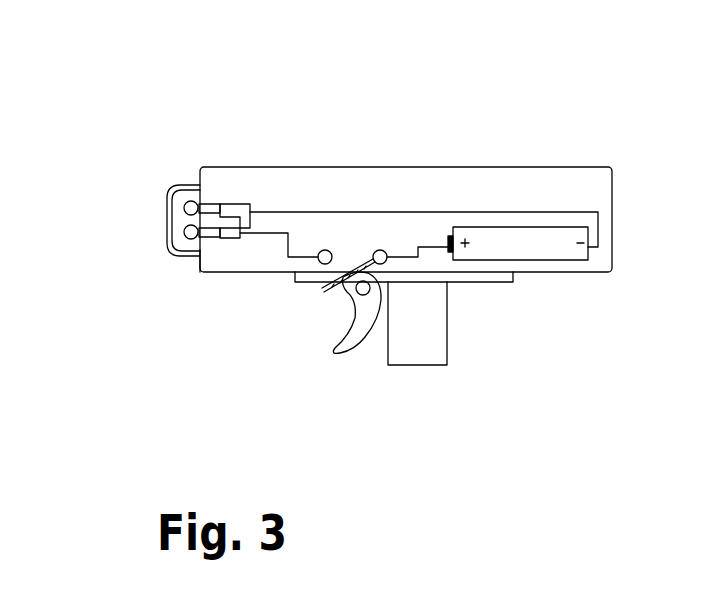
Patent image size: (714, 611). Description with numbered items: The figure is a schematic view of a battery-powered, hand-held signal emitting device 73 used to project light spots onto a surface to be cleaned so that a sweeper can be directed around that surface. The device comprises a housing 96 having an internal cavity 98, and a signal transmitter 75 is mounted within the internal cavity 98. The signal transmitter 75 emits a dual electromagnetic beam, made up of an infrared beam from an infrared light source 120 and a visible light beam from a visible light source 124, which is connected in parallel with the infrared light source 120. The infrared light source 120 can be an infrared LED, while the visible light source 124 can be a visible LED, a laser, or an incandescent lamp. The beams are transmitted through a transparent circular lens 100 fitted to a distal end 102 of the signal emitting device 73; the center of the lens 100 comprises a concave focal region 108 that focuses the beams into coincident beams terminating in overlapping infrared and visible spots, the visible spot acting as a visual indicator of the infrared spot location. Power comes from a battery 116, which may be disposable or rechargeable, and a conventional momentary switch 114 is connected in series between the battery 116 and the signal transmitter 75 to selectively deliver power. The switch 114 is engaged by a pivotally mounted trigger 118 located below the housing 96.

The signal emitting device 73 is at (137, 98).
The signal transmitter 75 is at (260, 203).
The housing 96 is at (258, 273).
The internal cavity 98 is at (374, 204).
The transparent circular lens 100 is at (190, 185).
The distal end 102 is at (197, 256).
The concave focal region 108 is at (167, 225).
The momentary switch 114 is at (328, 292).
The battery 116 is at (525, 250).
The trigger 118 is at (368, 322).
The infrared light source 120 is at (189, 200).
The visible light source 124 is at (182, 242).